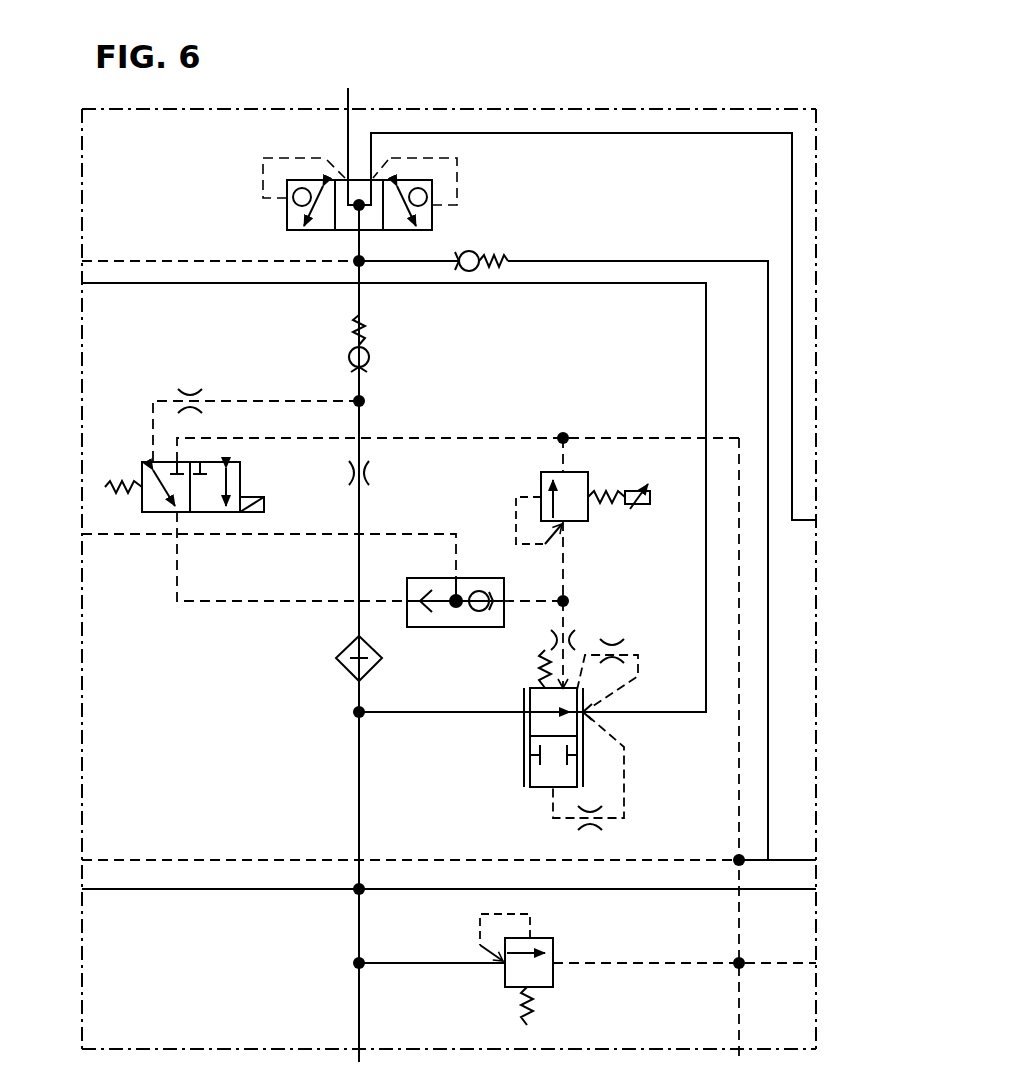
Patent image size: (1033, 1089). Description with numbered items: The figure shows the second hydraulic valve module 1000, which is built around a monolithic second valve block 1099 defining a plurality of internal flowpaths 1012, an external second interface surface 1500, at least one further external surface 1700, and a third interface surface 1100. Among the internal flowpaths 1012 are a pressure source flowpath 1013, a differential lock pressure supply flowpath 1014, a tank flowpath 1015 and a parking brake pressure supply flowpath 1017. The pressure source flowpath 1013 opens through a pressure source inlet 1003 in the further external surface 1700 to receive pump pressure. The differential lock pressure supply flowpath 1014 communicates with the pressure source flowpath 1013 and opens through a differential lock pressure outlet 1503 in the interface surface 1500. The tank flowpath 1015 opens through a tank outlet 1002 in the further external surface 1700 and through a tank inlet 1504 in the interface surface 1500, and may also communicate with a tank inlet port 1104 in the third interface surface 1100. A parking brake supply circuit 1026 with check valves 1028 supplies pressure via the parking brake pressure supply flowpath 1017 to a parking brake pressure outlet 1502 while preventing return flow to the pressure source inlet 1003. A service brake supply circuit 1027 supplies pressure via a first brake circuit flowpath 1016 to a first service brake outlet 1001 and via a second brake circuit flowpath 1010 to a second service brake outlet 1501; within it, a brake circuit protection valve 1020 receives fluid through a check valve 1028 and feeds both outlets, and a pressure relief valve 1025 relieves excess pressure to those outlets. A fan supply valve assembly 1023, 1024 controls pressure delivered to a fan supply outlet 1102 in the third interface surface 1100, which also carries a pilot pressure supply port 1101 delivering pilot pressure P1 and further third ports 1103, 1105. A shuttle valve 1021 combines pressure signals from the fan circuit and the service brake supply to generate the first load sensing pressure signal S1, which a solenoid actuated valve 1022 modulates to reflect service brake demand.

The second hydraulic valve module 1000 is at (600, 70).
The further external surface 1700 is at (449, 556).
The second valve block 1099 is at (440, 109).
The third interface surface 1100 is at (82, 636).
The second interface surface 1500 is at (816, 612).
The internal flowpaths 1012 is at (258, 968).
The pressure source flowpath 1013 is at (408, 645).
The pressure source inlet 1003 is at (359, 1055).
The first service brake outlet 1001 is at (359, 135).
The second brake circuit flowpath 1010 is at (621, 331).
The second service brake outlet 1501 is at (816, 520).
The first brake circuit flowpath 1016 is at (273, 175).
The service brake supply circuit 1027 is at (242, 160).
The brake circuit protection valve 1020 is at (215, 188).
The pilot pressure supply port 1101 is at (188, 253).
The pilot pressure P1 is at (146, 246).
The parking brake pressure supply flowpath 1017 is at (620, 529).
The parking brake supply circuit 1026 is at (488, 226).
The check valve 1028 is at (512, 252).
The parking brake pressure outlet 1502 is at (816, 860).
The fan supply outlet 1102 is at (82, 283).
The solenoid actuated valve 1022 is at (253, 480).
The third port 1103 is at (232, 555).
The first load sensing pressure signal S1 is at (130, 534).
The shuttle valve 1021 is at (442, 636).
The fan supply valve assembly 1023 is at (592, 530).
The fan supply valve assembly 1024 is at (513, 789).
The tank inlet port 1104 is at (82, 860).
The third port 1105 is at (445, 905).
The differential lock pressure outlet 1503 is at (816, 889).
The differential lock pressure supply flowpath 1014 is at (662, 889).
The tank flowpath 1015 is at (718, 761).
The tank outlet 1002 is at (768, 1070).
The tank inlet 1504 is at (622, 968).
The pressure relief valve 1025 is at (560, 946).